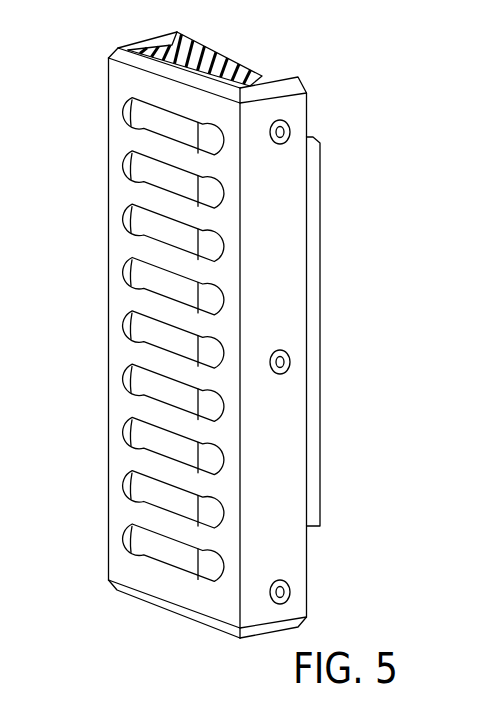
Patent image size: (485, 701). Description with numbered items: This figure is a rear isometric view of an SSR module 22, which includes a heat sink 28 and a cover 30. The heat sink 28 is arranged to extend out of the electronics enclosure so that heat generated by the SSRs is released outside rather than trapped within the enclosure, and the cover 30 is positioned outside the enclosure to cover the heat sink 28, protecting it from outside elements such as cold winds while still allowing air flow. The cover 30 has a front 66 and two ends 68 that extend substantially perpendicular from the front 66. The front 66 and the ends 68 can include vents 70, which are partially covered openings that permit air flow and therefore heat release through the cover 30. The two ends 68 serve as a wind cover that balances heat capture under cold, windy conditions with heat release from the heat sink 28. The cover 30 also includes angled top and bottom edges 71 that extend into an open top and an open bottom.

The SSR module 22 is at (217, 335).
The heat sink 28 is at (256, 80).
The cover 30 is at (128, 110).
The front 66 is at (121, 302).
The ends 68 is at (295, 258).
The vents 70 is at (147, 235).
The angled top and bottom edges 71 is at (128, 59).